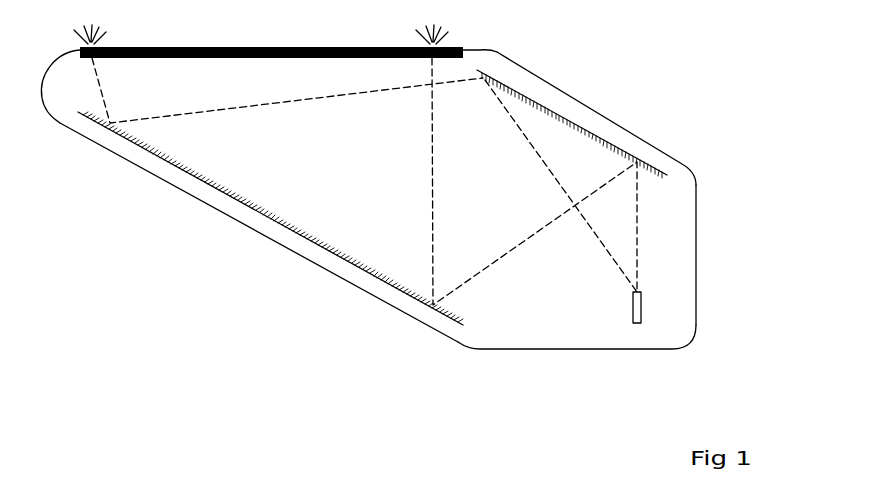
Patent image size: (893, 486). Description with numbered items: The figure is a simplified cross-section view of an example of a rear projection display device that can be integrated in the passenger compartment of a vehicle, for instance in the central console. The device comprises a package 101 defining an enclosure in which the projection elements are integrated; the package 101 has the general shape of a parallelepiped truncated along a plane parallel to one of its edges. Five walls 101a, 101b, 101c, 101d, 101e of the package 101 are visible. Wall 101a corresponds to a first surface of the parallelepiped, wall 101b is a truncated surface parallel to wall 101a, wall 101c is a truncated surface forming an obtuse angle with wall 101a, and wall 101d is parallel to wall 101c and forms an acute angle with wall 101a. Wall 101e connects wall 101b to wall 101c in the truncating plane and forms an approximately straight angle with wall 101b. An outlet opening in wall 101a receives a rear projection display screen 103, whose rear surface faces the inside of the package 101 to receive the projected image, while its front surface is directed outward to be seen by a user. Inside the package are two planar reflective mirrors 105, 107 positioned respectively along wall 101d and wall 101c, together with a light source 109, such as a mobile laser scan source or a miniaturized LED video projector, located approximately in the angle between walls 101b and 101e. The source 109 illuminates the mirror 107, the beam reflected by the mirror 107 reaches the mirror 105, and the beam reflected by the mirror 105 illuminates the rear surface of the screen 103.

The package 101 is at (408, 209).
The wall 101a is at (470, 50).
The wall 101b is at (500, 350).
The wall 101c is at (532, 73).
The wall 101d is at (182, 190).
The wall 101e is at (696, 232).
The rear projection display screen 103 is at (236, 48).
The planar reflective mirror 105 is at (303, 238).
The planar reflective mirror 107 is at (553, 110).
The light source 109 is at (641, 306).